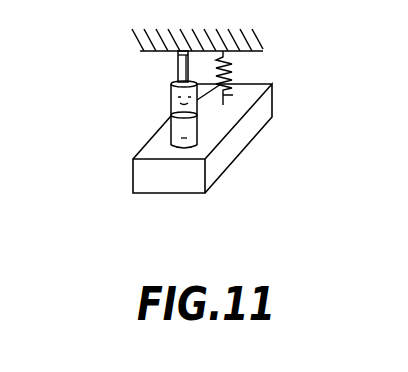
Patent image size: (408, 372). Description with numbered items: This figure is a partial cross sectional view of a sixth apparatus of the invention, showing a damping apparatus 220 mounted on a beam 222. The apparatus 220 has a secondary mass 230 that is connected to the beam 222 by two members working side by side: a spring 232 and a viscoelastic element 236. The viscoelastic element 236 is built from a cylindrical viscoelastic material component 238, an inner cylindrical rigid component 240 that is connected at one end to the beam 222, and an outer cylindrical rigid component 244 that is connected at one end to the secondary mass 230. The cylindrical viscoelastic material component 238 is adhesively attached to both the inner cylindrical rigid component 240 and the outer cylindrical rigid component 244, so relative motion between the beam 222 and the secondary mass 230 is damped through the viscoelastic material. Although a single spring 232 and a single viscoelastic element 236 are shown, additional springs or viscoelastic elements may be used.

The damping apparatus 220 is at (179, 137).
The beam 222 is at (247, 51).
The secondary mass 230 is at (220, 163).
The spring 232 is at (232, 87).
The viscoelastic element 236 is at (166, 112).
The cylindrical viscoelastic material component 238 is at (176, 81).
The inner cylindrical rigid component 240 is at (178, 62).
The outer cylindrical rigid component 244 is at (172, 128).